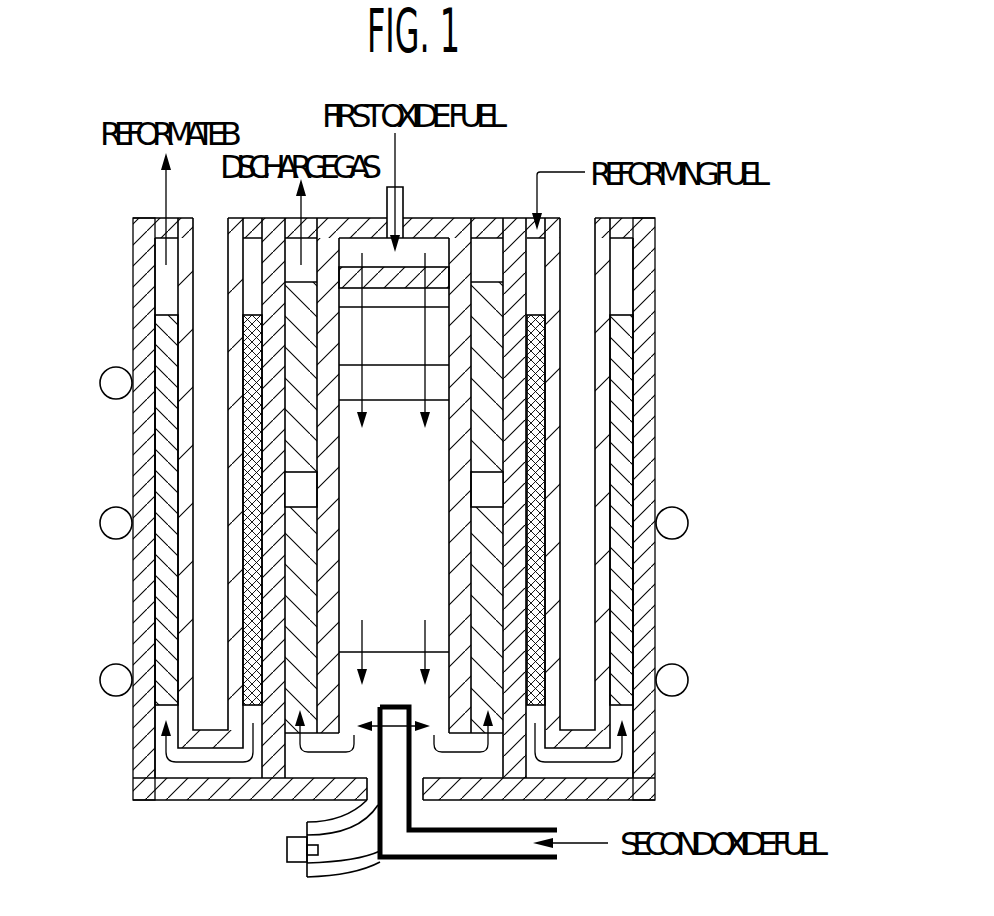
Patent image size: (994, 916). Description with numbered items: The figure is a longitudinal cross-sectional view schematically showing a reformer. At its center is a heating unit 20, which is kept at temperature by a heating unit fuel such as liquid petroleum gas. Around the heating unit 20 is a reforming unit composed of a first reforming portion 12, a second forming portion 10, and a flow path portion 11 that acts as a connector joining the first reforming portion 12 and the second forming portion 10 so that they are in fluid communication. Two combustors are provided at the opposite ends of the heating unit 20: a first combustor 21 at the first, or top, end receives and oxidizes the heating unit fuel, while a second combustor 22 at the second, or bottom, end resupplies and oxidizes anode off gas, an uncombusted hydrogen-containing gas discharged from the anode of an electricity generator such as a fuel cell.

The second forming portion 10 is at (620, 567).
The flow path portion 11 is at (622, 765).
The first reforming portion 12 is at (542, 648).
The heating unit 20 is at (370, 581).
The first combustor 21 is at (400, 203).
The second combustor 22 is at (388, 760).